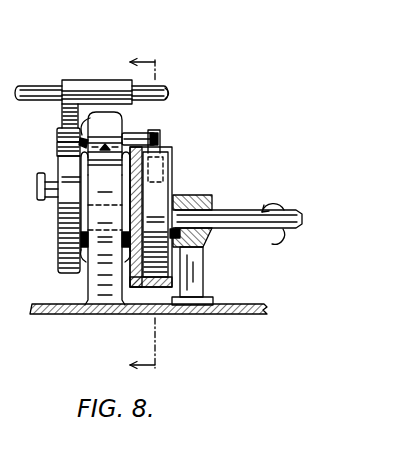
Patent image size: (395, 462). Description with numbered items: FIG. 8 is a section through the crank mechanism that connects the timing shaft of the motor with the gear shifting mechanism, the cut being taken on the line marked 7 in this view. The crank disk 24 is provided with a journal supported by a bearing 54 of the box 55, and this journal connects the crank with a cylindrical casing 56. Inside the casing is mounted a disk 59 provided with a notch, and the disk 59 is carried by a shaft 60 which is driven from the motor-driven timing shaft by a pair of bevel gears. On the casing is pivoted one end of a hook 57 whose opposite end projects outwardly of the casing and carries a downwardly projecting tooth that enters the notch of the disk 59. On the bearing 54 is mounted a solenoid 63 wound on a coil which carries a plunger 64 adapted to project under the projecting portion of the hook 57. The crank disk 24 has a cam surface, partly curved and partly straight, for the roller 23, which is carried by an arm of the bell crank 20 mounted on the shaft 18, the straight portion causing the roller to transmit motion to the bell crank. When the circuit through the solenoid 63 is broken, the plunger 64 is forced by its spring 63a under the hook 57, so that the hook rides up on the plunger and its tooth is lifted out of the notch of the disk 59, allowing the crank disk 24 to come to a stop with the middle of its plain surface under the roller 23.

The spring 7 is at (152, 214).
The shaft 18 is at (33, 85).
The bell crank 20 is at (62, 108).
The spring 63a is at (62, 127).
The roller 23 is at (57, 154).
The crank disk 24 is at (62, 217).
The solenoid 63 is at (107, 122).
The plunger 64 is at (145, 131).
The hook 57 is at (160, 143).
The bearing 54 is at (92, 280).
The disk 59 is at (172, 183).
The shaft 60 is at (234, 212).
The cylindrical casing 56 is at (175, 280).
The box 55 is at (262, 306).